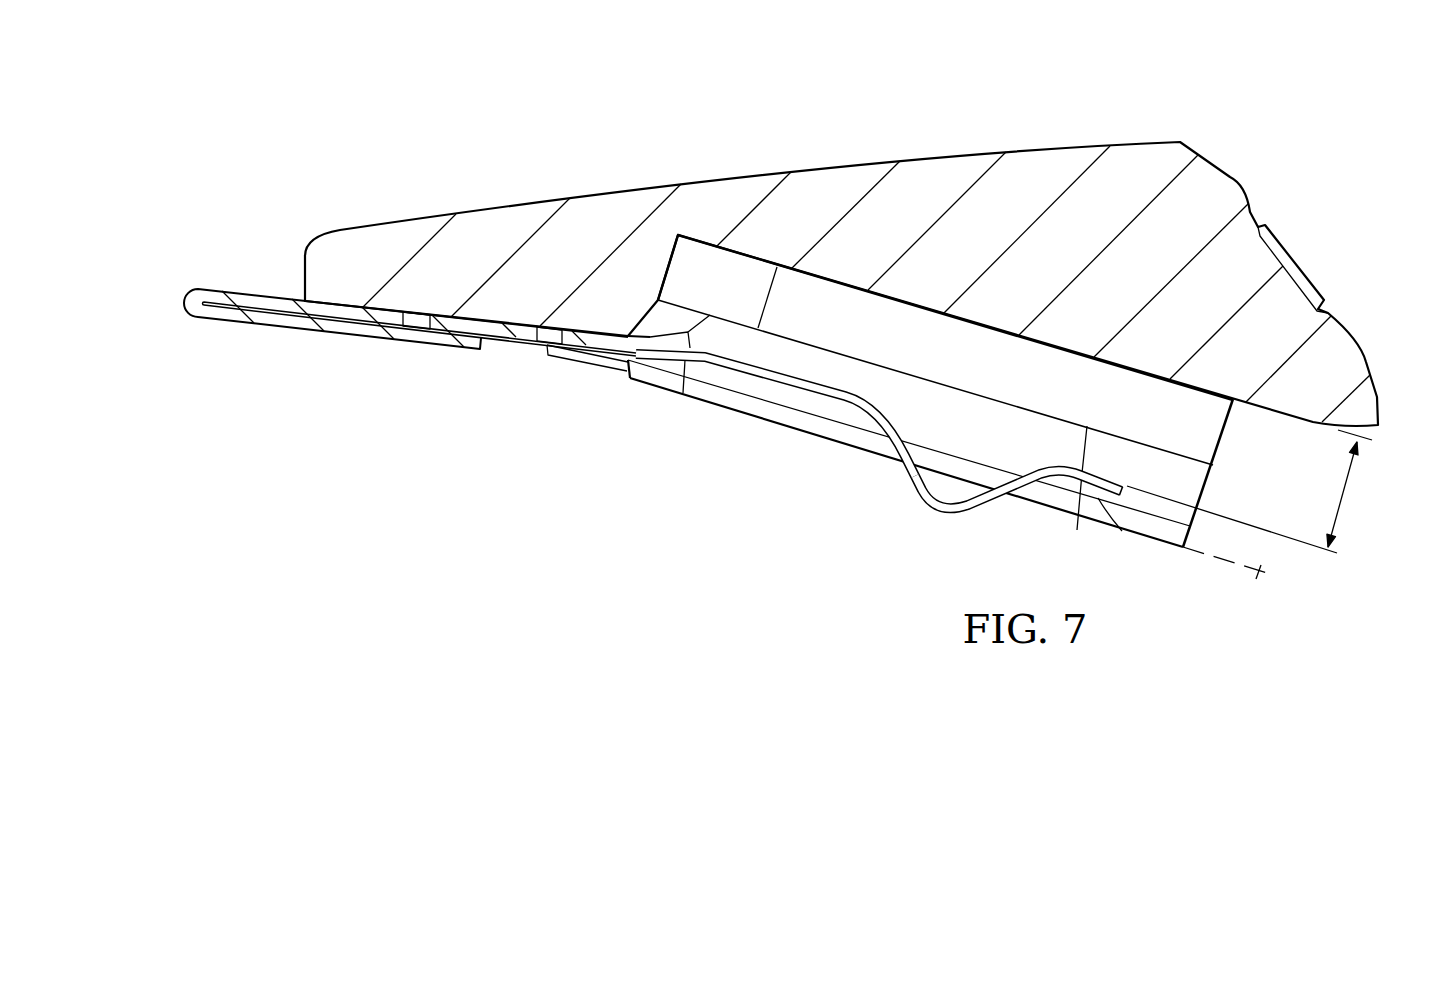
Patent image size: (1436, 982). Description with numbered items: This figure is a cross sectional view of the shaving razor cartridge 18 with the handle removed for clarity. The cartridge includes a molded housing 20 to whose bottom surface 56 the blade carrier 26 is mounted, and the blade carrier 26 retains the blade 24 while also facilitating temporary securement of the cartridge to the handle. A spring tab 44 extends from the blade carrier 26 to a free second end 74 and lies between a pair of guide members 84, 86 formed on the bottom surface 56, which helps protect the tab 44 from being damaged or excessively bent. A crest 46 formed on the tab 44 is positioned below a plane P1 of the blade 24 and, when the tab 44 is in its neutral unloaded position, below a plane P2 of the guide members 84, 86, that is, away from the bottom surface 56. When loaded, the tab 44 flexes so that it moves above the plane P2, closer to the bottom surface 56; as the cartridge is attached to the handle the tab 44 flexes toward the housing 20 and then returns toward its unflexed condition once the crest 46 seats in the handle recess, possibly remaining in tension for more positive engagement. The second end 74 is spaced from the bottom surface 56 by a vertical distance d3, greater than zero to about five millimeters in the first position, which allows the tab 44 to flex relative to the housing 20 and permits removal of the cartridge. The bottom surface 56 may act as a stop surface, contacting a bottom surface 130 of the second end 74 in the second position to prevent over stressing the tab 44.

The shaving razor cartridge 18 is at (781, 329).
The housing 20 is at (733, 186).
The blade 24 is at (292, 331).
The blade carrier 26 is at (357, 342).
The tab 44 is at (903, 483).
The crest 46 is at (945, 518).
The bottom surface 56 is at (1058, 349).
The second end 74 is at (1100, 504).
The guide member 84 is at (868, 446).
The guide member 86 is at (747, 418).
The bottom surface of the second end 130 is at (1096, 472).
The plane of the blade P1 is at (499, 353).
The plane of the guide members P2 is at (1251, 583).
The vertical distance d3 is at (1251, 491).